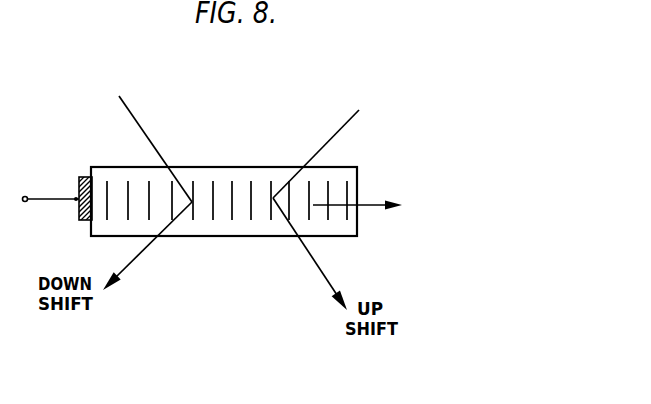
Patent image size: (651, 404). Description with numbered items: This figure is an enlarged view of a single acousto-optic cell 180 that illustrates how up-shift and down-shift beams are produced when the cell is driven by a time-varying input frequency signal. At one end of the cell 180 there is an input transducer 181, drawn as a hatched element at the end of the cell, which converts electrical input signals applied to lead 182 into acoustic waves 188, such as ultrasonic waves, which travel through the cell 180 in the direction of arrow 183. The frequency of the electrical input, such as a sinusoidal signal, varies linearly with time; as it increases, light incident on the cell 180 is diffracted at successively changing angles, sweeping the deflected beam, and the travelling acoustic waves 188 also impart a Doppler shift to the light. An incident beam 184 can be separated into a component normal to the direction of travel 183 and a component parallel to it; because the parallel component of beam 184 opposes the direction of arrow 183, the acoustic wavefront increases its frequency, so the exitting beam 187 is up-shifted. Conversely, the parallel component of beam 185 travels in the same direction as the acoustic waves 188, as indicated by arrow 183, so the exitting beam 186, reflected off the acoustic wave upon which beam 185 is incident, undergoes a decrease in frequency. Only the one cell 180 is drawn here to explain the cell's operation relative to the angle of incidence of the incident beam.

The acousto-optic cell 180 is at (347, 167).
The input stage 181 is at (79, 176).
The lead 182 is at (50, 202).
The arrow 183 is at (370, 207).
The incident beam 184 is at (337, 133).
The beam 185 is at (143, 128).
The exitting beam 186 is at (131, 263).
The exitting beam 187 is at (323, 279).
The acoustic waves 188 is at (212, 212).